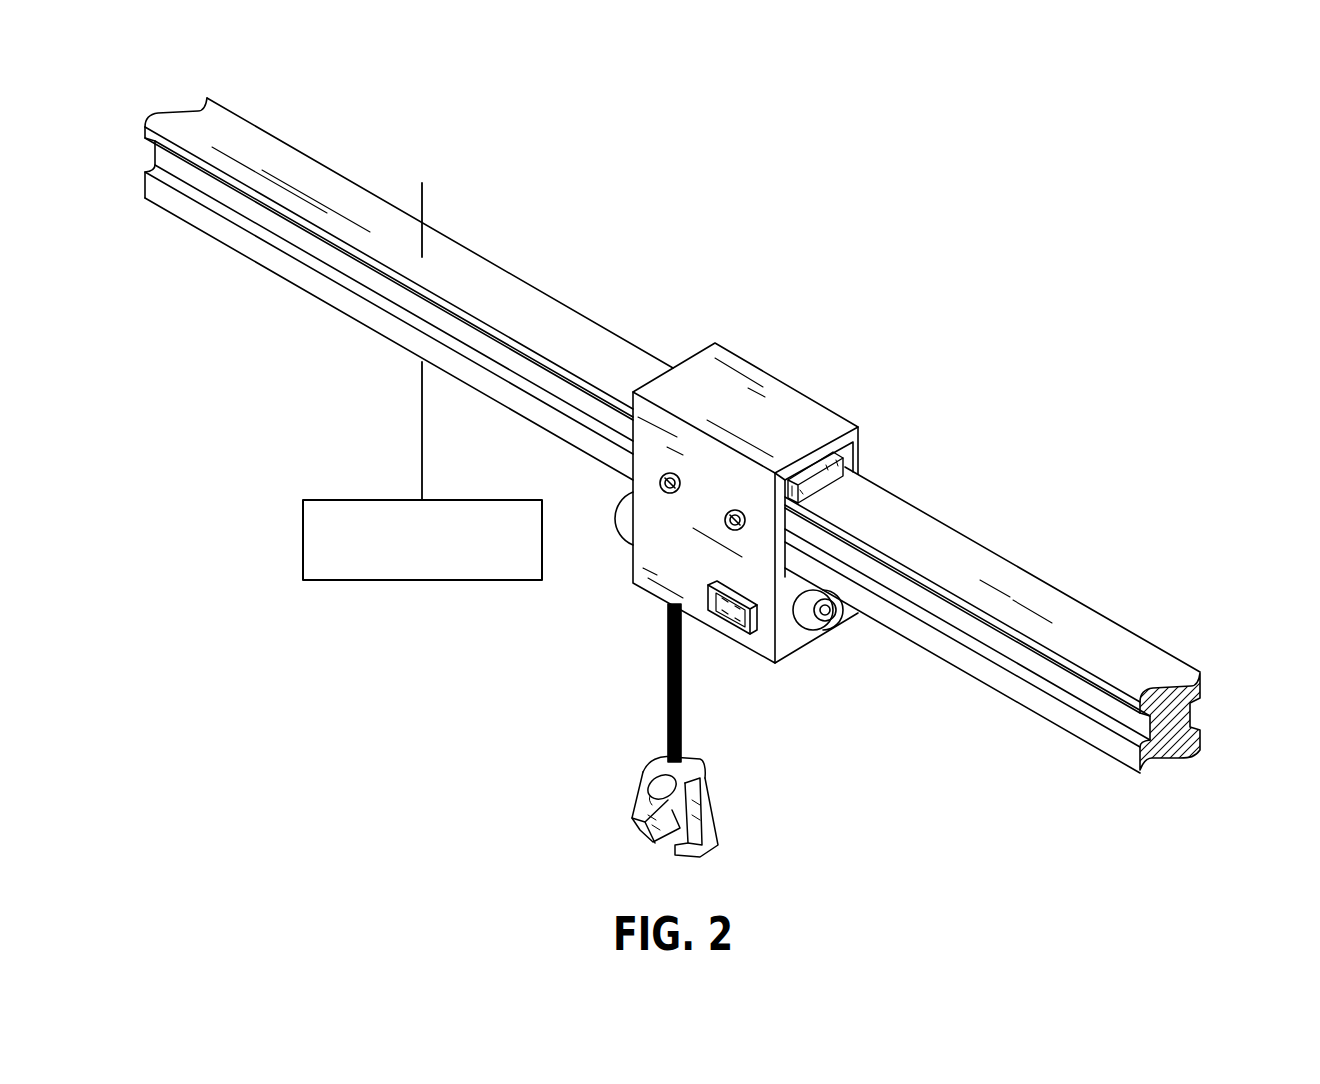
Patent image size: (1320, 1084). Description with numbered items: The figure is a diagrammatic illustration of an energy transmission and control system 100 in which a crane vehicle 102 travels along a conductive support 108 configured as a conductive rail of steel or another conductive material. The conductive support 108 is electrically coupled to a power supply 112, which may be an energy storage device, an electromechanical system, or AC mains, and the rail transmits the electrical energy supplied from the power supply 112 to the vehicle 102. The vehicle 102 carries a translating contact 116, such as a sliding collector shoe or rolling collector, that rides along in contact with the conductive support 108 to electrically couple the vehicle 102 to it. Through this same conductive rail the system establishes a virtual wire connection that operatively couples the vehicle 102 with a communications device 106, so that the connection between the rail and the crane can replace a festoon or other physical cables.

The energy transmission and control system 100 is at (763, 176).
The vehicle 102 is at (793, 381).
The communications device 106 is at (360, 497).
The conductive support 108 is at (1156, 641).
The power supply 112 is at (423, 107).
The translating contact 116 is at (826, 478).